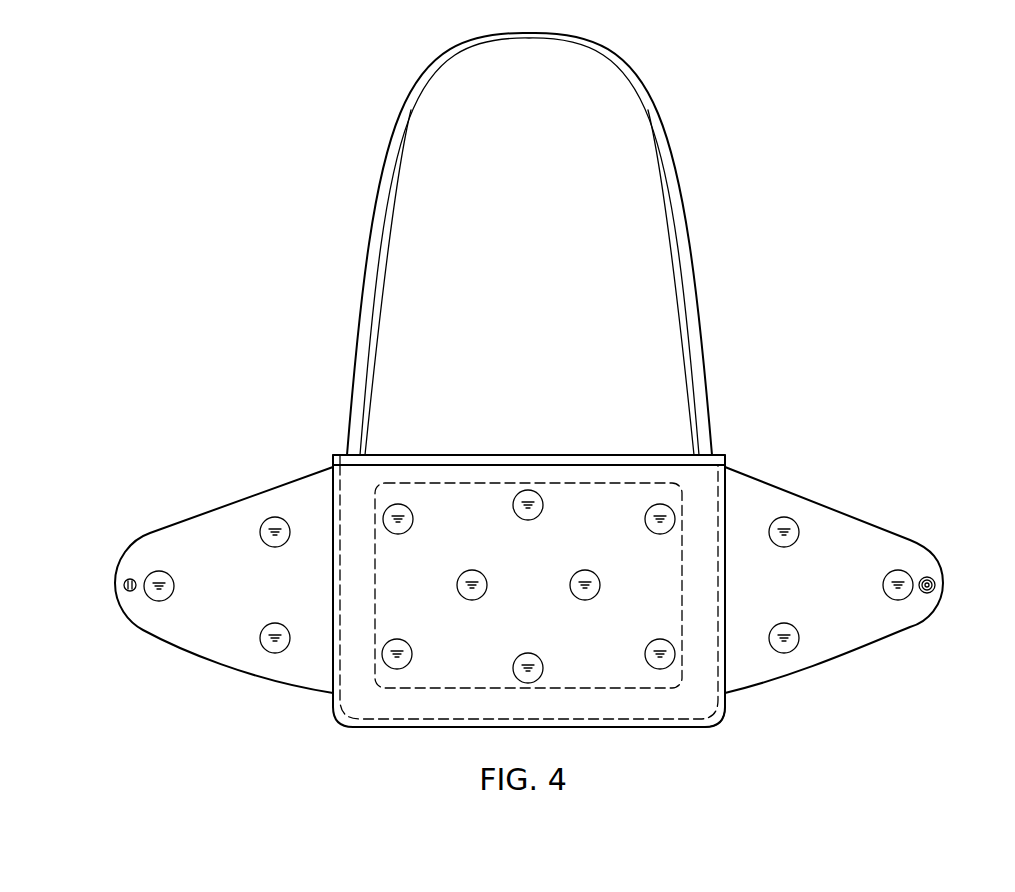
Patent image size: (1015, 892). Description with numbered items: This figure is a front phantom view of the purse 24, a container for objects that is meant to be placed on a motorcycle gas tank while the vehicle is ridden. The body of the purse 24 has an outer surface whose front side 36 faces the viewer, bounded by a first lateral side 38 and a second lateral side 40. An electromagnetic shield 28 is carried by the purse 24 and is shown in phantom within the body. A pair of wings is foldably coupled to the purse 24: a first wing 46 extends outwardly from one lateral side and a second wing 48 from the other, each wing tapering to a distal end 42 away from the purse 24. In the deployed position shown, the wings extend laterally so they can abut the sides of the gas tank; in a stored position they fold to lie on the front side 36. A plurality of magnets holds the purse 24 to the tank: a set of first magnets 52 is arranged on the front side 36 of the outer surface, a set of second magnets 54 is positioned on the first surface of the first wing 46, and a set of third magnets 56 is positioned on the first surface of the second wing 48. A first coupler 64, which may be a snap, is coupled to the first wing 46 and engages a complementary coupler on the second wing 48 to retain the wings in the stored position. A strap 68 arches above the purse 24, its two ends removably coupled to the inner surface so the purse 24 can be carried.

The purse 24 is at (727, 457).
The electromagnetic shield 28 is at (422, 688).
The front side 36 is at (693, 698).
The first lateral side 38 is at (333, 497).
The second lateral side 40 is at (727, 500).
The distal end 42 is at (115, 583).
The first wing 46 is at (870, 643).
The second wing 48 is at (220, 663).
The first magnets 52 is at (473, 580).
The second magnets 54 is at (788, 632).
The third magnets 56 is at (270, 632).
The first coupler 64 is at (926, 572).
The strap 68 is at (430, 78).